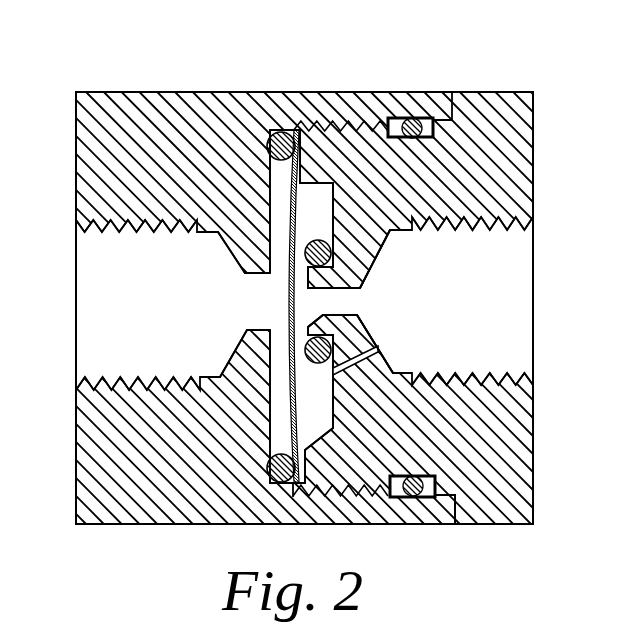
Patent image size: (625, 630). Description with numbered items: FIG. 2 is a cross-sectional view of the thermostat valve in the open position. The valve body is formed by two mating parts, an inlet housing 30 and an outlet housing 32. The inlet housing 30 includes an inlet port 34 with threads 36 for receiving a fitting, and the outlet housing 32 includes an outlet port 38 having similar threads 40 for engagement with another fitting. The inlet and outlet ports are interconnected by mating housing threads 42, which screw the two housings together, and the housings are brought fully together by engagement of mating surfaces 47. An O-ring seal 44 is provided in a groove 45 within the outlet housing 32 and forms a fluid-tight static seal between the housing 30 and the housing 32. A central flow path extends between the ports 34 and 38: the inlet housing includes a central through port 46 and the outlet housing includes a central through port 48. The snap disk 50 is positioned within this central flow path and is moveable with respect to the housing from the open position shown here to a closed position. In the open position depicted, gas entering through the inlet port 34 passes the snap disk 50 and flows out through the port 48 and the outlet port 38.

The inlet housing 30 is at (165, 108).
The outlet housing 32 is at (490, 98).
The inlet port 34 is at (86, 305).
The threads 36 is at (100, 225).
The outlet port 38 is at (493, 302).
The threads 40 is at (497, 223).
The mating housing threads 42 is at (370, 123).
The O-ring seal 44 is at (440, 480).
The groove 45 is at (398, 498).
The central through port 46 is at (263, 308).
The mating surfaces 47 is at (452, 515).
The central through port 48 is at (347, 300).
The snap disk 50 is at (293, 428).